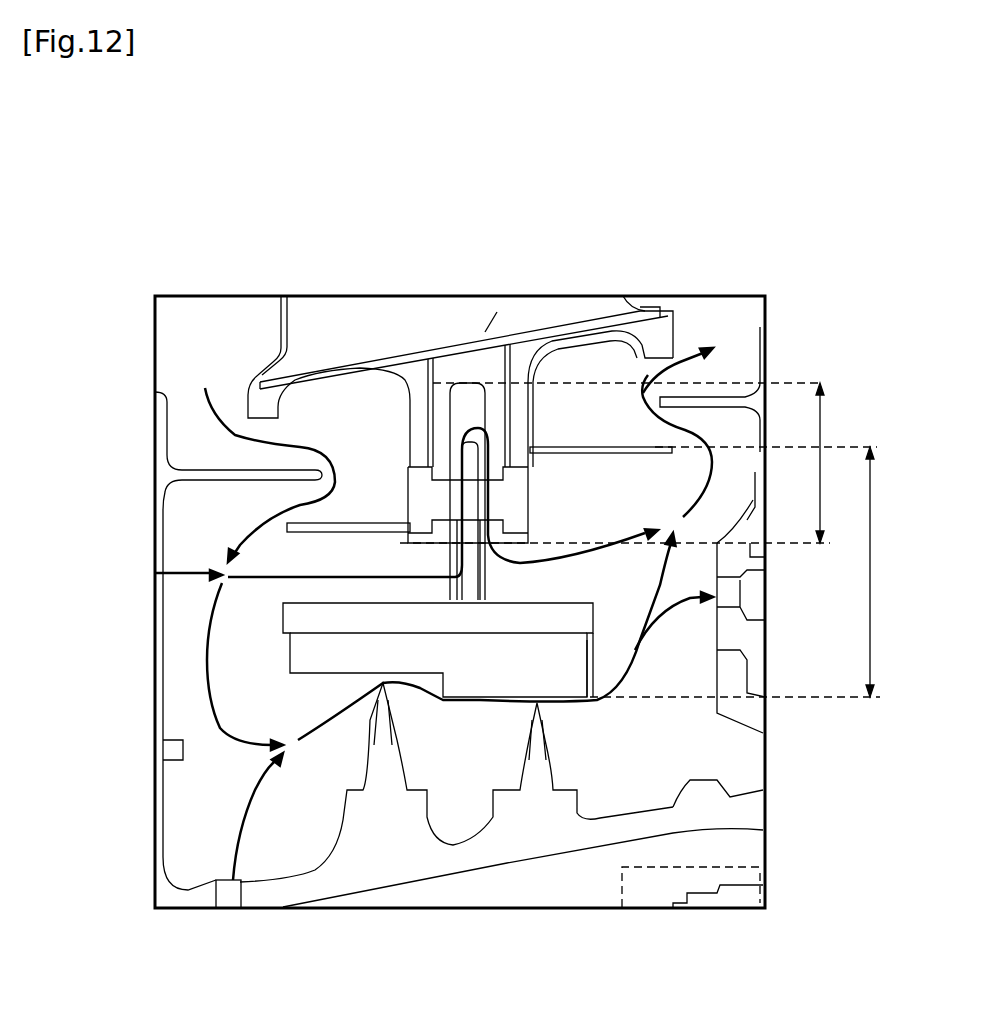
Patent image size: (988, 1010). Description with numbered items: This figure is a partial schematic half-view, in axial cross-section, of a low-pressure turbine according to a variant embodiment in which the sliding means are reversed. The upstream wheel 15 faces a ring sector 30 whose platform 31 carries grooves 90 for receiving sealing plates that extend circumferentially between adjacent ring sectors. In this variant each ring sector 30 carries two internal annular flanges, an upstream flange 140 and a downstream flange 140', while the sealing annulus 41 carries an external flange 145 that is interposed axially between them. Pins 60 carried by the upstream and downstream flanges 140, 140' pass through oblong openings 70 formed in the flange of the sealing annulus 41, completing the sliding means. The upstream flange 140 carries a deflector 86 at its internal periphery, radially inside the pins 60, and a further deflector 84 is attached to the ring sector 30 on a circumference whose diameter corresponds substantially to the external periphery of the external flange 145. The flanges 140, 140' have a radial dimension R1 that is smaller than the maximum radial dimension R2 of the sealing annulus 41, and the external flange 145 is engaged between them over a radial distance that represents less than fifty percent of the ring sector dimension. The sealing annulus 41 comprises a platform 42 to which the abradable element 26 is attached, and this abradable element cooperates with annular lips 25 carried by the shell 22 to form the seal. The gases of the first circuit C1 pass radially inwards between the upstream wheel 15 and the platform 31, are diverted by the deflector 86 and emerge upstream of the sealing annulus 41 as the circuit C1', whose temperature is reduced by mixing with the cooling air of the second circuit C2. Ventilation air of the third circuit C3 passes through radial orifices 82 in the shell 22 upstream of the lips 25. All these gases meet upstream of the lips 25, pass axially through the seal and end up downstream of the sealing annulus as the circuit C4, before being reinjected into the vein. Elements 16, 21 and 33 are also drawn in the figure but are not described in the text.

The upstream wheel 15 is at (137, 358).
The right wall 16 is at (778, 345).
The partition wall 21 is at (163, 476).
The shell 22 is at (508, 872).
The annular lips 25 is at (393, 745).
The abradable element 26 is at (582, 673).
The ring sector 30 is at (624, 280).
The platform 31 is at (467, 333).
The flange 33 is at (292, 318).
The sealing annulus 41 is at (607, 633).
The platform 42 is at (283, 607).
The pins 60 is at (520, 492).
The oblong openings 70 is at (467, 513).
The radial orifices 82 is at (243, 893).
The deflector 84 is at (620, 436).
The deflector 86 is at (356, 512).
The grooves 90 is at (550, 412).
The upstream internal annular flange 140 is at (402, 339).
The downstream internal annular flange 140' is at (589, 355).
The external flange 145 is at (483, 580).
The first circuit C1 is at (270, 437).
The circuit C1' is at (434, 464).
The second circuit C2 is at (213, 583).
The third circuit C3 is at (250, 833).
The circuit C4 is at (600, 707).
The radial dimension R1 is at (615, 463).
The maximum radial dimension R2 is at (749, 572).